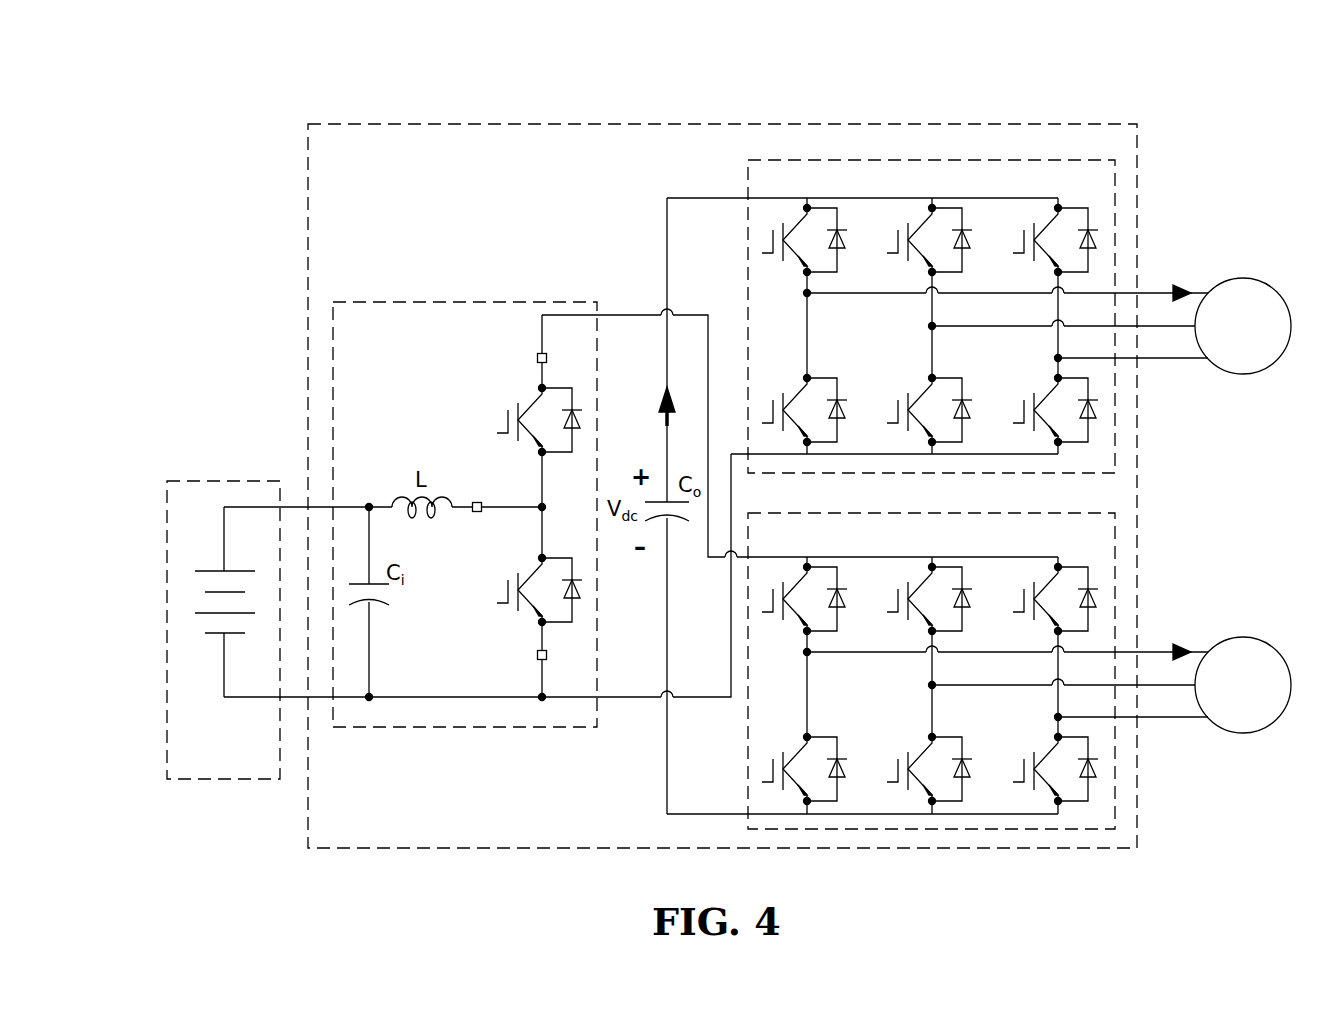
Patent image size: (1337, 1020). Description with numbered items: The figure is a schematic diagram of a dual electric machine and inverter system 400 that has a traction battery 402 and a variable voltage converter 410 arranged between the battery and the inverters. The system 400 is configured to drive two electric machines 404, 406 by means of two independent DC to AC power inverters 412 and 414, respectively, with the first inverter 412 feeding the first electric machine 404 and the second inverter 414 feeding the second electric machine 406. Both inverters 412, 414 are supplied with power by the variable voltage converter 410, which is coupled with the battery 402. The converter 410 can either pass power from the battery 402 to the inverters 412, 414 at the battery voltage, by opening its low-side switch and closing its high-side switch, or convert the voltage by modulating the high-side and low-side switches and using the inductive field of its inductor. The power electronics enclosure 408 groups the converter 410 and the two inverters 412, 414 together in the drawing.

The dual electric machine and inverter system 400 is at (1067, 66).
The traction battery 402 is at (248, 481).
The electric machine 404 is at (1268, 286).
The electric machine 406 is at (1268, 645).
The power electronics module 408 is at (723, 124).
The variable voltage converter 410 is at (472, 302).
The DC to AC power inverter 412 is at (920, 160).
The DC to AC power inverter 414 is at (920, 513).